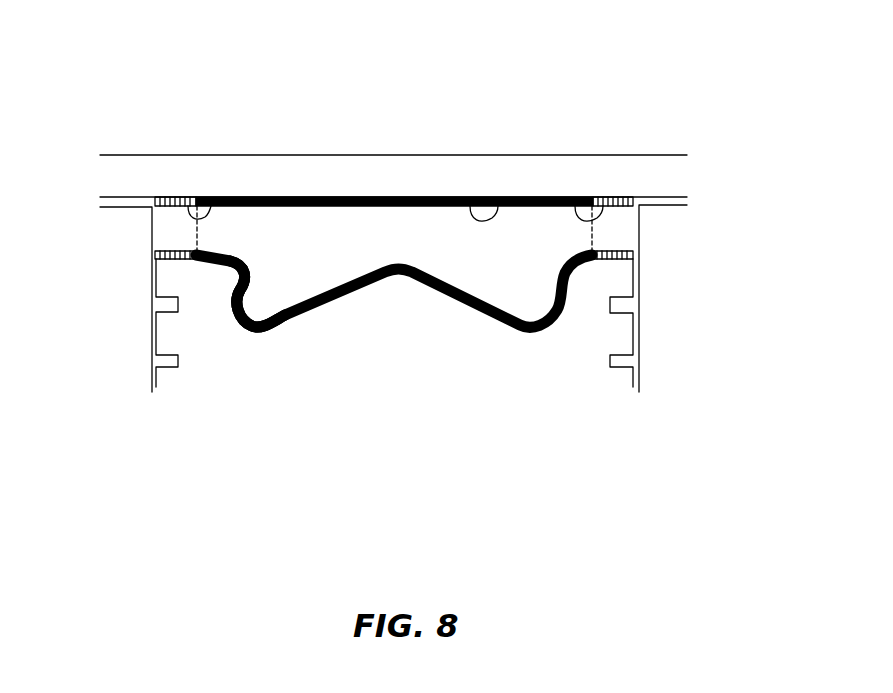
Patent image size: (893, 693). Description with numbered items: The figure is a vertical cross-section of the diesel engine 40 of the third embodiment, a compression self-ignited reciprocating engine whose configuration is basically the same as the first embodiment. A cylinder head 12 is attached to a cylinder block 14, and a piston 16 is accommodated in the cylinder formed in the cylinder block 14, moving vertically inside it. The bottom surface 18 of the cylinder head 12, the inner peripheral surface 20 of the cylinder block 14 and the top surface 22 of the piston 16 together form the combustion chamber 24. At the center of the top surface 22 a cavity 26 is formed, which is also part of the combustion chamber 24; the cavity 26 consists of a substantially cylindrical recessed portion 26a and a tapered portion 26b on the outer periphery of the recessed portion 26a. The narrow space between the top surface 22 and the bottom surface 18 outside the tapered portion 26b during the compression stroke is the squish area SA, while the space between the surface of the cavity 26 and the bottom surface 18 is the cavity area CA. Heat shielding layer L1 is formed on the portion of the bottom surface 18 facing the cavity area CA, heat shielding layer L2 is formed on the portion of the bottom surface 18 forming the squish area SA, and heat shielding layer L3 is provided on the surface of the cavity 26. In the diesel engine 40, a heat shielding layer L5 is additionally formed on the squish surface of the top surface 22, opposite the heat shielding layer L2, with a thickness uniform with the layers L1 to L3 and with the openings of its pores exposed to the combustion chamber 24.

The diesel engine 40 is at (548, 72).
The cylinder head 12 is at (657, 165).
The bottom surface 18 is at (143, 200).
The inner peripheral surface 20 is at (152, 228).
The cylinder block 14 is at (667, 310).
The piston 16 is at (618, 330).
The combustion chamber 24 is at (288, 247).
The top surface 22 is at (503, 310).
The cavity 26 is at (249, 386).
The recessed portion 26a is at (275, 305).
The tapered portion 26b is at (245, 310).
The heat shielding layer L1 is at (478, 199).
The heat shielding layer L2 is at (193, 197).
The heat shielding layer L3 is at (326, 277).
The heat shielding layer L5 is at (157, 255).
The squish area SA is at (183, 235).
The cavity area CA is at (383, 243).